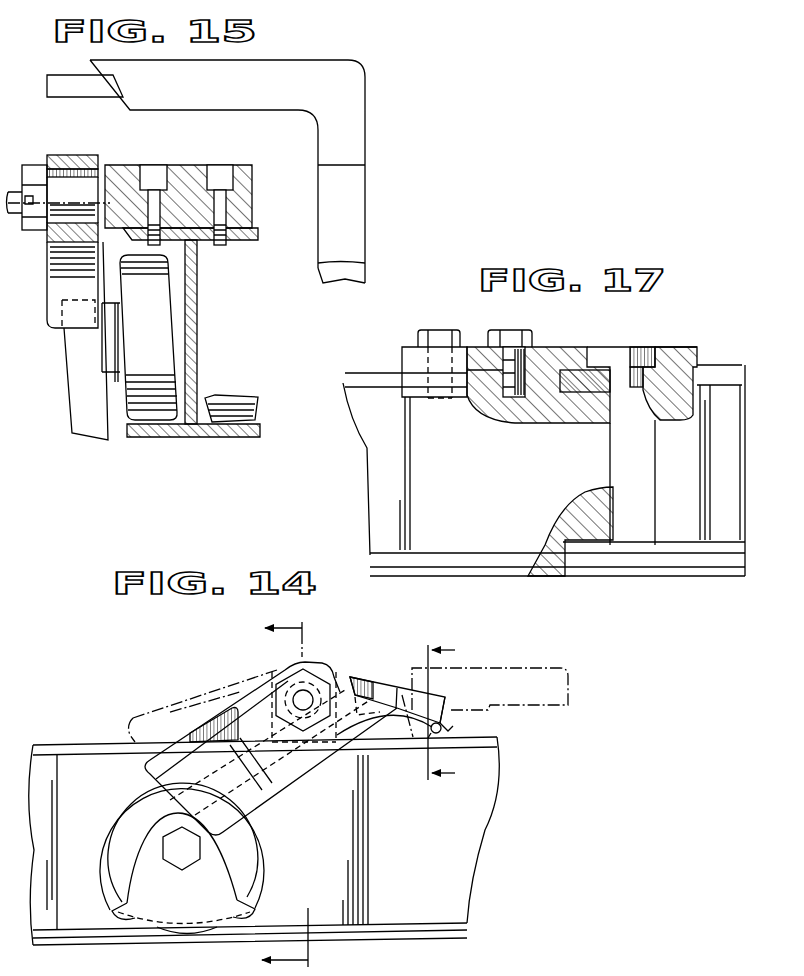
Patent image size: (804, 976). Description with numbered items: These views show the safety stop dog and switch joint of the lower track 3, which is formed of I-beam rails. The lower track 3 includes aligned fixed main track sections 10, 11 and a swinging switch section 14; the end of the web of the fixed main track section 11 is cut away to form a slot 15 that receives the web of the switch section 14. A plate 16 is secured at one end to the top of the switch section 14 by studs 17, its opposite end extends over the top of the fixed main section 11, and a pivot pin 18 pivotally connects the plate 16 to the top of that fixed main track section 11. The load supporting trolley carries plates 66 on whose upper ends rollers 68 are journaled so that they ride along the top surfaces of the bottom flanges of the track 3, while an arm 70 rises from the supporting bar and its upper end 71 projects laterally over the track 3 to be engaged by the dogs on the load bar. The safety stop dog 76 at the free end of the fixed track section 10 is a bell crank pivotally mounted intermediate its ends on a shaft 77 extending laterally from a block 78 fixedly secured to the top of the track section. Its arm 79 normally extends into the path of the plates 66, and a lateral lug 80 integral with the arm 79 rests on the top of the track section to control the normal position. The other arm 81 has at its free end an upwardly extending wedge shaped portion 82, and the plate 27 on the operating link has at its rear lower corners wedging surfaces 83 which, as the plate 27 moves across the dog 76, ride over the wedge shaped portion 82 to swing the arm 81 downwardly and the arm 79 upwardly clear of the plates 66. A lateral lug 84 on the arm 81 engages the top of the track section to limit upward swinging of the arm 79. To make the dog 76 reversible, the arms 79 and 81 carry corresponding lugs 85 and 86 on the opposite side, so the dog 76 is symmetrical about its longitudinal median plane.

In FIG. 15, the lower track 3 is at (205, 363).
In FIG. 17, the lower track 3 is at (640, 576).
In FIG. 14, the lower track 3 is at (446, 864).
In FIG. 15, the fixed main track section 10 is at (200, 398).
In FIG. 14, the fixed main track section 10 is at (466, 896).
In FIG. 17, the fixed main track section 11 is at (722, 535).
In FIG. 17, the switch section 14 is at (503, 532).
In FIG. 17, the slot 15 is at (655, 445).
In FIG. 14, the slot 15 is at (285, 792).
In FIG. 17, the plate 16 is at (572, 350).
In FIG. 14, the plate 16 is at (445, 713).
In FIG. 17, the studs 17 is at (505, 335).
In FIG. 17, the pivot pin 18 is at (642, 347).
In FIG. 14, the plate 27 is at (533, 667).
In FIG. 15, the plates 66 is at (78, 382).
In FIG. 14, the plates 66 is at (186, 899).
In FIG. 15, the rollers 68 is at (165, 335).
In FIG. 14, the rollers 68 is at (253, 867).
In FIG. 15, the arm 70 is at (362, 249).
In FIG. 15, the upper end of the arm 71 is at (277, 66).
In FIG. 15, the safety stop dog 76 is at (41, 163).
In FIG. 14, the safety stop dog 76 is at (323, 666).
In FIG. 15, the shaft 77 is at (80, 180).
In FIG. 14, the shaft 77 is at (310, 698).
In FIG. 15, the block 78 is at (250, 223).
In FIG. 15, the arm of the dog 79 is at (42, 247).
In FIG. 14, the arm of the dog 79 is at (278, 788).
In FIG. 14, the lateral lug 80 is at (197, 715).
In FIG. 14, the arm of the dog 81 is at (393, 683).
In FIG. 14, the wedge shaped portion 82 is at (441, 711).
In FIG. 14, the wedging surfaces 83 is at (447, 728).
In FIG. 14, the lateral lug 84 is at (378, 680).
In FIG. 14, the lateral lug 85 is at (369, 687).
In FIG. 14, the lateral lug 86 is at (233, 728).